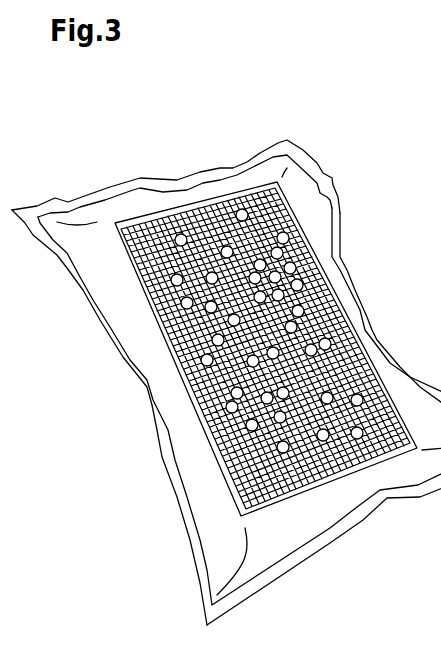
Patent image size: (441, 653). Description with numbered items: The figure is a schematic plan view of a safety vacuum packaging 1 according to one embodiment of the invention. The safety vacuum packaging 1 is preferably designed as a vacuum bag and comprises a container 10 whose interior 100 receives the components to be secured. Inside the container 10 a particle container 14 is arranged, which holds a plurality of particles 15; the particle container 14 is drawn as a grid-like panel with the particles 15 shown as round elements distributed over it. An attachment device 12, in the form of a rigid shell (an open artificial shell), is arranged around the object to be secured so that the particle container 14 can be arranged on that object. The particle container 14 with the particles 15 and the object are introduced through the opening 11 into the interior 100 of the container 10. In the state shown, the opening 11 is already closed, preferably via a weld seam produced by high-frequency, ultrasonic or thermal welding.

The safety vacuum packaging 1 is at (330, 148).
The container 10 is at (193, 547).
The opening 11 is at (345, 517).
The attachment device 12 is at (139, 212).
The particle container 14 is at (347, 363).
The particles 15 is at (296, 269).
The interior 100 is at (270, 540).